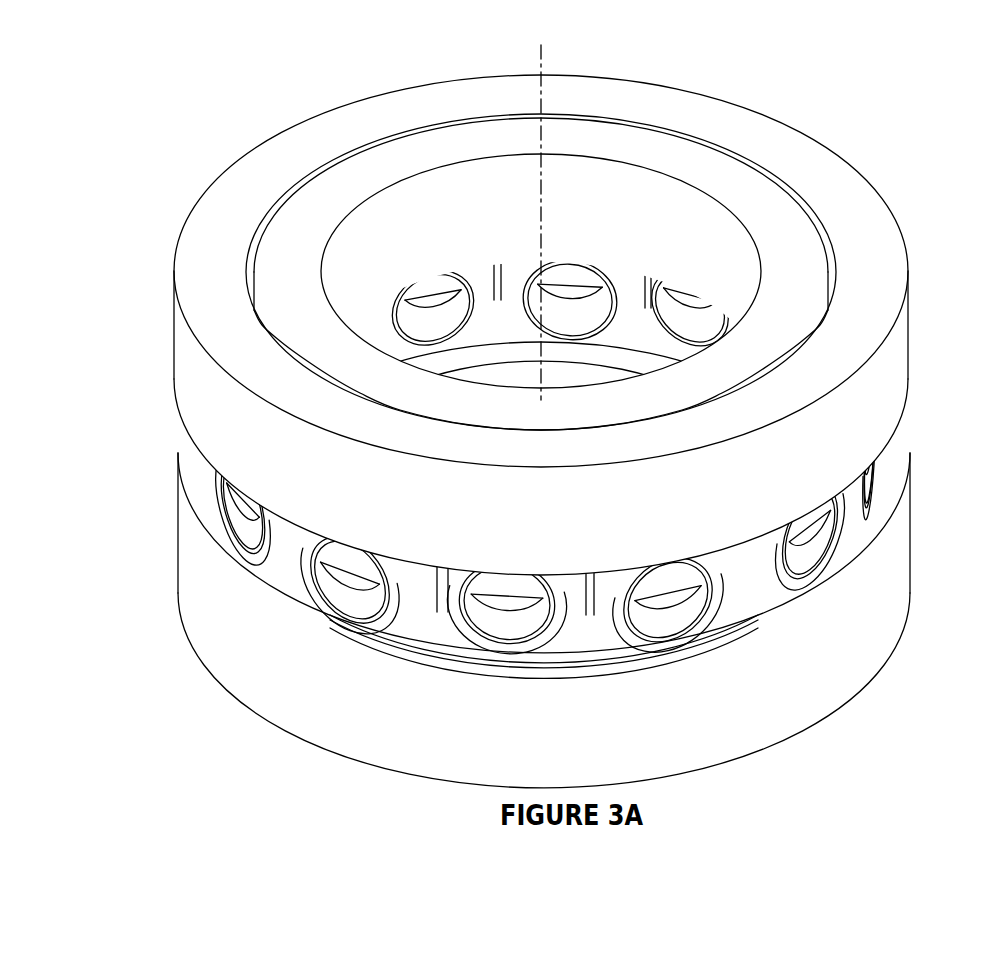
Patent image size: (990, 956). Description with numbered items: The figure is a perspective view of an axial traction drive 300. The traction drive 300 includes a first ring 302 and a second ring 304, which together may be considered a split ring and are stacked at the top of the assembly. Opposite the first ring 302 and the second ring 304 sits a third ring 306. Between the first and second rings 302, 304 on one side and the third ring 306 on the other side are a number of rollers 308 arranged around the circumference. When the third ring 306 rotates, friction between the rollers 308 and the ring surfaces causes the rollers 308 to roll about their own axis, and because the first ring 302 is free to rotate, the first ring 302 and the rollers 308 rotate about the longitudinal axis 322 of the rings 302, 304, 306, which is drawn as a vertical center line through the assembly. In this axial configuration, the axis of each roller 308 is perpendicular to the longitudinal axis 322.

The axial traction drive 300 is at (152, 136).
The first ring 302 is at (863, 192).
The second ring 304 is at (728, 178).
The third ring 306 is at (887, 576).
The rollers 308 is at (800, 540).
The longitudinal axis 322 is at (541, 60).